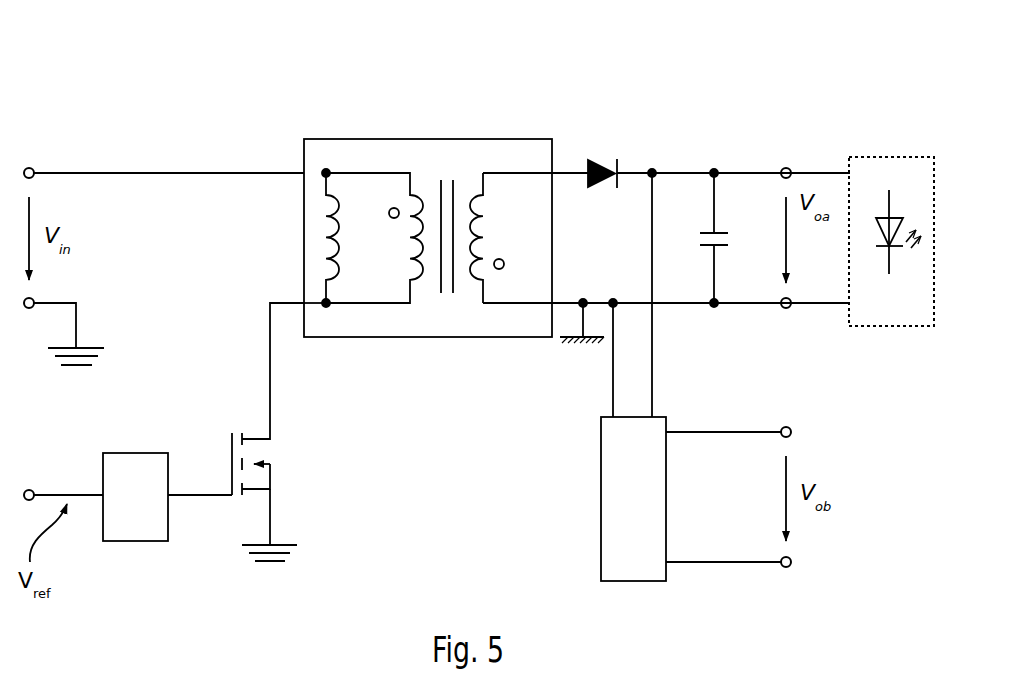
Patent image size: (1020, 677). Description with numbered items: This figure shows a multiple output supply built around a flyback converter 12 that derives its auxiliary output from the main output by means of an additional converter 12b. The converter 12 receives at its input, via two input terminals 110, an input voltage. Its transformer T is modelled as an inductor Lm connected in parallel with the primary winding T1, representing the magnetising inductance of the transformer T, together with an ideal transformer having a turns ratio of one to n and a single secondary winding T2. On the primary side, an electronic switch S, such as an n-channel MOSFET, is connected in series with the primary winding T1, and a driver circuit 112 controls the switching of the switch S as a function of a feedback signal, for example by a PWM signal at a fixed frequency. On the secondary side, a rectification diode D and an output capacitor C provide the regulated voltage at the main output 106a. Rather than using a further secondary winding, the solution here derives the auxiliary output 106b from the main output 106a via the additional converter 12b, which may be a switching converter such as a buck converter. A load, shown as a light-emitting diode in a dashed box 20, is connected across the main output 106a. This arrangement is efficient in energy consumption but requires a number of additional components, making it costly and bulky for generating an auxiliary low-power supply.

The converter 12 is at (272, 77).
The additional converter 12b is at (598, 482).
The load (LED) 20 is at (889, 150).
The input terminals 110 is at (32, 165).
The driver circuit 112 is at (136, 530).
The main output 106a is at (787, 152).
The auxiliary output 106b is at (787, 411).
The transformer T is at (386, 232).
The primary winding T1 is at (422, 292).
The secondary winding T2 is at (471, 292).
The inductor Lm is at (321, 246).
The rectification diode D is at (600, 157).
The output capacitor C is at (708, 229).
The electronic switch S is at (225, 420).